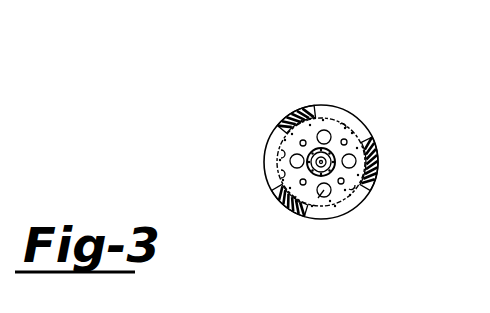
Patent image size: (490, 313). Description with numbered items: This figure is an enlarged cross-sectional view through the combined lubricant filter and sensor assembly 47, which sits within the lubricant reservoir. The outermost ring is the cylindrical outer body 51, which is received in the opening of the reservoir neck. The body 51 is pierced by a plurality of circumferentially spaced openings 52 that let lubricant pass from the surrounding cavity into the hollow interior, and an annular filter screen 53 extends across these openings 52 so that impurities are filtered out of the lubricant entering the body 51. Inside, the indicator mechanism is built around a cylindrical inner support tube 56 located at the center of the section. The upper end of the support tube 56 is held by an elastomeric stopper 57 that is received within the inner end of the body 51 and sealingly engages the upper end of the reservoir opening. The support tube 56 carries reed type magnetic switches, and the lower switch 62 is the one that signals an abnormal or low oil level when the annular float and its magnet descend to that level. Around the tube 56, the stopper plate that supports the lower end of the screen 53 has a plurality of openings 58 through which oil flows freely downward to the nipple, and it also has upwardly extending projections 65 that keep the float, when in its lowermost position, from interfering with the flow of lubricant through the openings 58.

The combined lubricant filter and sensor assembly 47 is at (317, 88).
The cylindrical outer body 51 is at (292, 114).
The circumferentially spaced openings 52 is at (328, 119).
The annular filter screen 53 is at (362, 122).
The cylindrical inner support tube 56 is at (358, 164).
The elastomeric stopper 57 is at (345, 190).
The openings 58 is at (321, 196).
The reed type magnetic switch 62 is at (358, 148).
The upwardly extending projections 65 is at (358, 200).